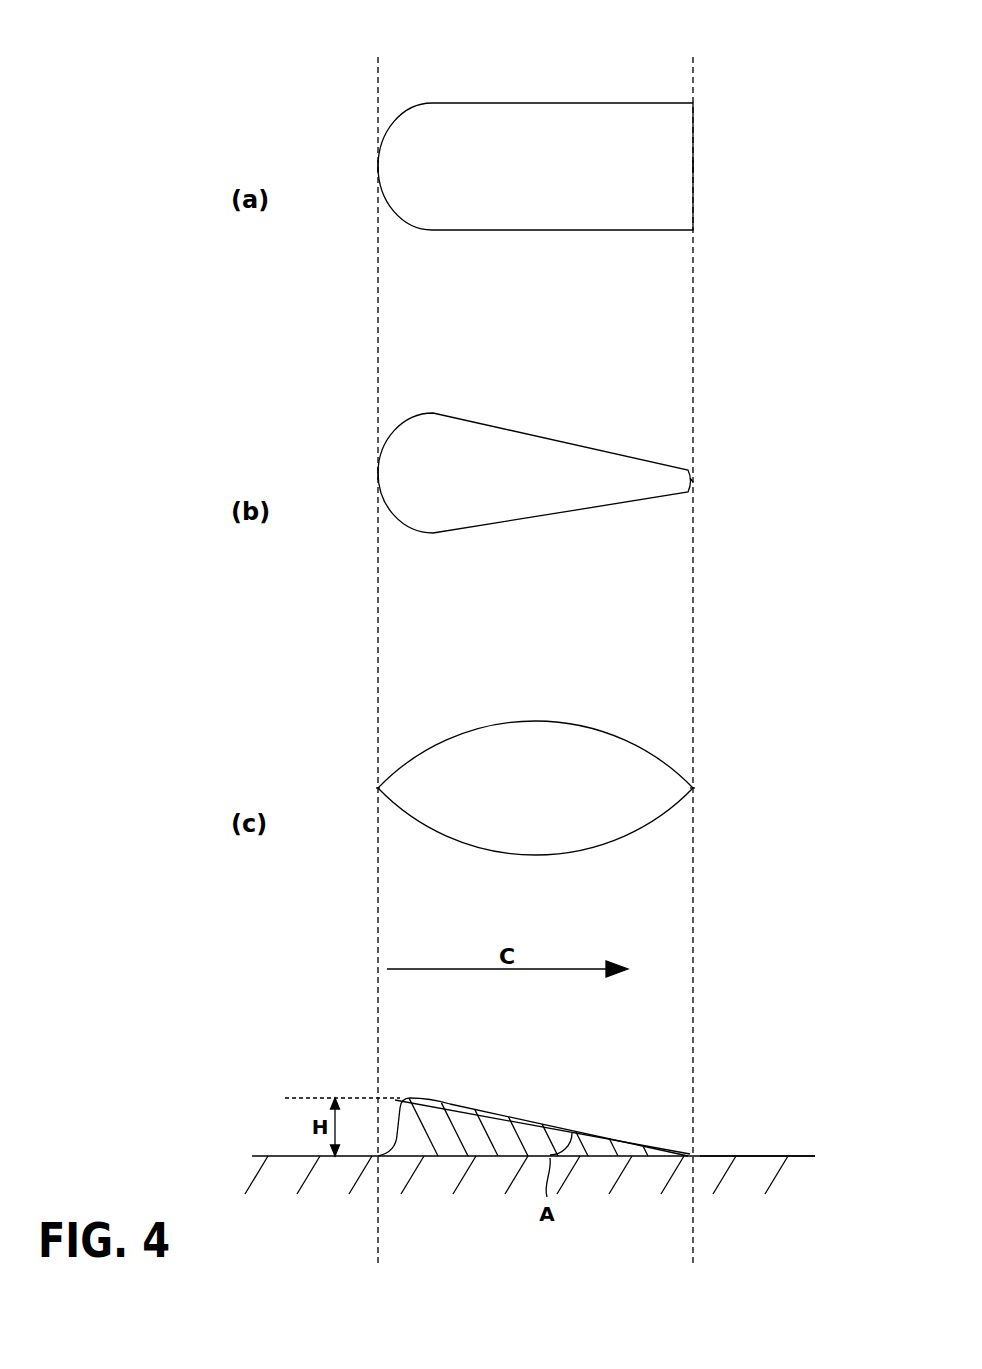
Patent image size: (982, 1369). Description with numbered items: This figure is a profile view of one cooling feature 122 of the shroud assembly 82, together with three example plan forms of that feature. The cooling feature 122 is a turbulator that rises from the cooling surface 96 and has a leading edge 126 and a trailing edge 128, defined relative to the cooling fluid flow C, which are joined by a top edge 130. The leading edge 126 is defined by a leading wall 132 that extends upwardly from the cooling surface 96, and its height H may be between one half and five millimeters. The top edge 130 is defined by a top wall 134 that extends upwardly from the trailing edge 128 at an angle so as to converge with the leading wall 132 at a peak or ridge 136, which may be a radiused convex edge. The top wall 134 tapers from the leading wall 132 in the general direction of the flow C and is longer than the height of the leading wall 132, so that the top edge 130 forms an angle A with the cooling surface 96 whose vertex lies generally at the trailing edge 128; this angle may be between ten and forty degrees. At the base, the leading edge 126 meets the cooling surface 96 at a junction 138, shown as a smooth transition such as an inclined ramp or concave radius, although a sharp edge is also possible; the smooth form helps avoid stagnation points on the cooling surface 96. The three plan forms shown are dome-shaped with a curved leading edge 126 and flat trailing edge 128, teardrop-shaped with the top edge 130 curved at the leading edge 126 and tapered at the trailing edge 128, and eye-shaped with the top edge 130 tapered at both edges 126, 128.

The surface 82 is at (266, 1144).
The cooling surface 96 is at (755, 1155).
The cooling feature 122 is at (257, 1009).
The leading edge 126 is at (380, 164).
The trailing edge 128 is at (688, 165).
The top edge 130 is at (560, 133).
The leading wall 132 is at (394, 1106).
The top wall 134 is at (547, 1124).
The ridge 136 is at (405, 1097).
The junction 138 is at (383, 1150).